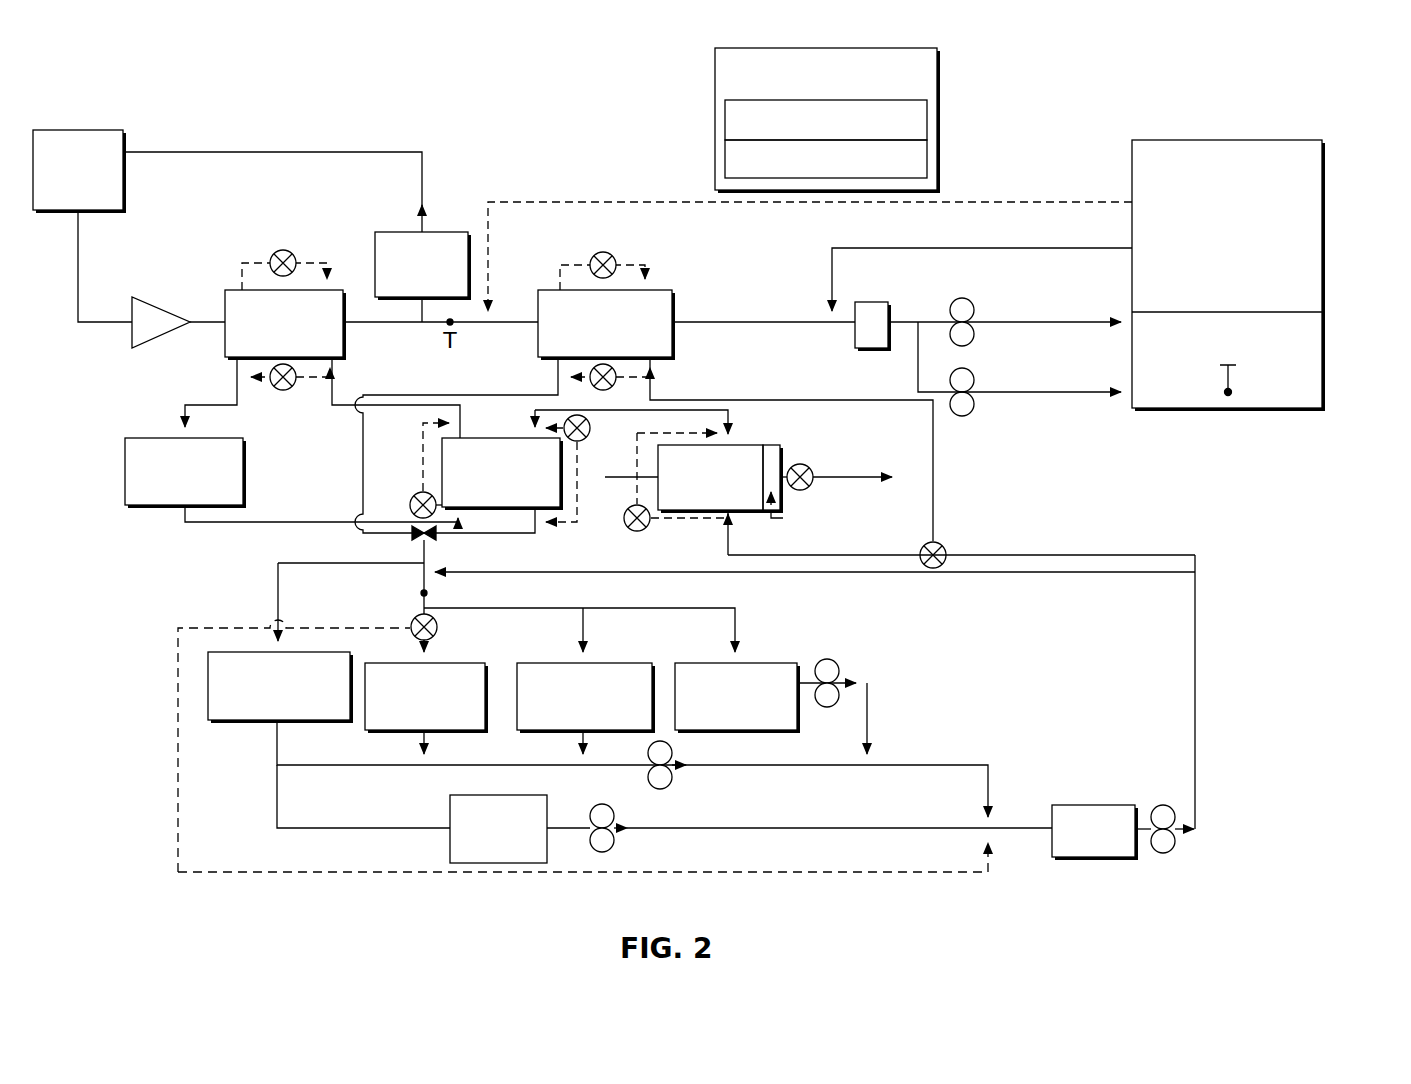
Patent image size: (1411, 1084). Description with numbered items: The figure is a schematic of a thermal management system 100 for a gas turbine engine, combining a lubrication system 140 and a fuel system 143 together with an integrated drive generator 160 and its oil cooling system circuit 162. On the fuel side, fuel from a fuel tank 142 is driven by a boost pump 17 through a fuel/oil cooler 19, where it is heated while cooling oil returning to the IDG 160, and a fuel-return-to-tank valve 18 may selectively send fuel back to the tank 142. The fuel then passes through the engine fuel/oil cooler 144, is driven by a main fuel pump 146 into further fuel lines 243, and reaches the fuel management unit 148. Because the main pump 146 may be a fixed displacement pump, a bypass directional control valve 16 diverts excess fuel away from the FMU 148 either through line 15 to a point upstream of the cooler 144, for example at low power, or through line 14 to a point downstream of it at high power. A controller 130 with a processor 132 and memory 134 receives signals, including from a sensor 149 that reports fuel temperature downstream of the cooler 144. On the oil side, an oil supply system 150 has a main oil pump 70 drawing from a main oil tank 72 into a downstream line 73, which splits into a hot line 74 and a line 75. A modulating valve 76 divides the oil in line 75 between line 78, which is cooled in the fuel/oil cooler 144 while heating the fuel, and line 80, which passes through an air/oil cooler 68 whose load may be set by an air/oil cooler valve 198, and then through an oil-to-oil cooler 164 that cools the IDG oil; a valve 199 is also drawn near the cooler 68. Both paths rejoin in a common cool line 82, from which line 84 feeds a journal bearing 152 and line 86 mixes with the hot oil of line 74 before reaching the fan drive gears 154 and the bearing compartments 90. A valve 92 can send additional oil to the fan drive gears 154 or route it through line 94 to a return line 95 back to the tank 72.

The thermal management system 100 is at (500, 127).
The controller 130 is at (715, 67).
The processor 132 is at (927, 120).
The memory 134 is at (927, 160).
The fuel tank 142 is at (123, 140).
The fuel-return-to-tank valve 18 is at (440, 232).
The line 15 is at (613, 200).
The line 14 is at (883, 248).
The bypass directional control valve 16 is at (1322, 230).
The fuel management unit 148 is at (1322, 362).
The sensor 149 is at (1227, 408).
The fuel system 143 is at (362, 252).
The fuel/oil cooler 144 is at (672, 302).
The fuel/oil cooler 19 is at (225, 298).
The boost pump 17 is at (128, 335).
The main fuel pump 146 is at (972, 380).
The fuel lines 243 is at (1065, 393).
The oil-to-oil cooler 164 is at (527, 438).
The air/oil cooler valve 198 is at (805, 462).
The AOC inlet valve 199 is at (620, 478).
The line 78 is at (933, 470).
The air/oil cooler 68 is at (750, 512).
The integrated drive generator 160 is at (147, 508).
The oil cooling system circuit 162 is at (208, 523).
The line 84 is at (322, 563).
The downstream line 82 is at (426, 545).
The line 86 is at (420, 585).
The valve 92 is at (412, 638).
The fan drive gears 154 is at (442, 662).
The bearing compartments 90 is at (597, 662).
The line 80 is at (835, 556).
The modulating valve 76 is at (930, 568).
The line 75 is at (1038, 555).
The line 74 is at (1018, 573).
The downstream line 73 is at (1197, 625).
The oil supply system 150 is at (1182, 515).
The journal bearing 152 is at (250, 722).
The return line 95 is at (787, 768).
The main oil tank 72 is at (1090, 805).
The main oil pump 70 is at (1177, 842).
The line 94 is at (390, 872).
The lubrication system 140 is at (1258, 691).